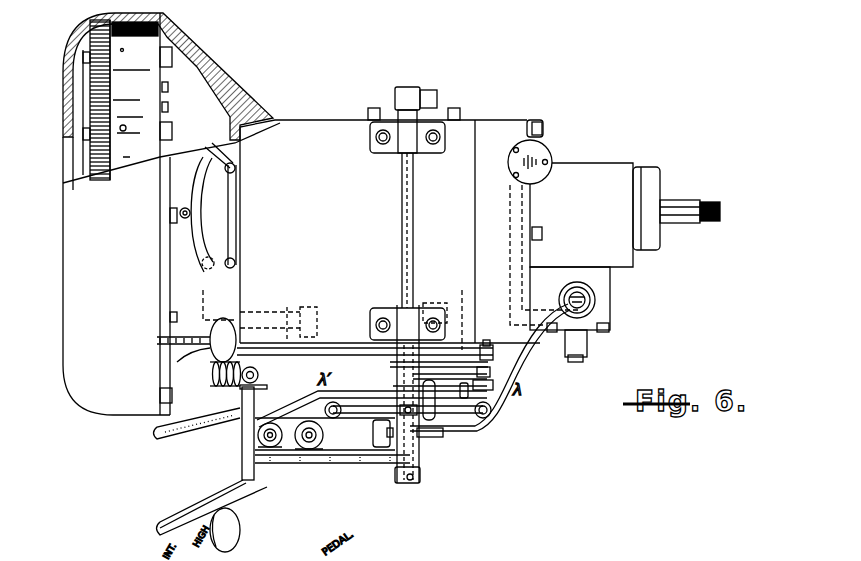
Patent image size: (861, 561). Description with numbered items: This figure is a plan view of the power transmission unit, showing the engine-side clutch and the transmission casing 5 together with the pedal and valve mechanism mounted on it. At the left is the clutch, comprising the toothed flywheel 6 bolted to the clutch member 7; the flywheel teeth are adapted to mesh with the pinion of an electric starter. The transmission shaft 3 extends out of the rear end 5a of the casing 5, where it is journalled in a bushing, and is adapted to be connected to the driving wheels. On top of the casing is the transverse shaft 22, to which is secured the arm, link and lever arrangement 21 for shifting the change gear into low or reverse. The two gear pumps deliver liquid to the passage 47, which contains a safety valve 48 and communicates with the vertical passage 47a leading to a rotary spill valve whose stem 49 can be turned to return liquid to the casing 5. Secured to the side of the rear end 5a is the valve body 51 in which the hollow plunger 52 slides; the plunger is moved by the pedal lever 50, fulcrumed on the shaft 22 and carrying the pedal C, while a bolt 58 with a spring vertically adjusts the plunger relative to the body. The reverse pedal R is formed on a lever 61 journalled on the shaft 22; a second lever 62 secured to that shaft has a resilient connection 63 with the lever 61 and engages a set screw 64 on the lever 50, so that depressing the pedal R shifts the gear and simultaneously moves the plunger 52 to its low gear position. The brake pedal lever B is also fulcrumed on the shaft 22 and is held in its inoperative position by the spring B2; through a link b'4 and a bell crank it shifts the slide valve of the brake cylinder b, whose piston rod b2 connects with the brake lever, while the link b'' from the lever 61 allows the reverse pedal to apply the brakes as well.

The flywheel 6 is at (95, 78).
The clutch member 7 is at (141, 100).
The transmission casing 5 is at (315, 130).
The arm, link and lever arrangement 21 is at (432, 95).
The rear end of the casing 5a is at (525, 125).
The transverse shaft 22 is at (413, 200).
The transmission shaft 3 is at (683, 205).
The vertical passage 47a is at (545, 258).
The valve body 51 is at (605, 312).
The hollow plunger 52 is at (598, 302).
The pedal lever B is at (170, 340).
The passage 47 is at (248, 310).
The safety valve 48 is at (290, 308).
The link tube b'' is at (448, 353).
The rod b'4 is at (500, 369).
The valve stem 49 is at (495, 368).
The lever 61 is at (298, 405).
The resilient connection 63 is at (336, 403).
The set screw 64 is at (490, 418).
The piston rod b2 is at (466, 400).
The second lever 62 is at (444, 410).
The foot pedal R is at (242, 448).
The spring B2 is at (156, 430).
The brake cylinder b is at (336, 473).
The bolt 58 is at (316, 445).
The pedal lever 50 is at (252, 488).
The pedal C is at (240, 520).